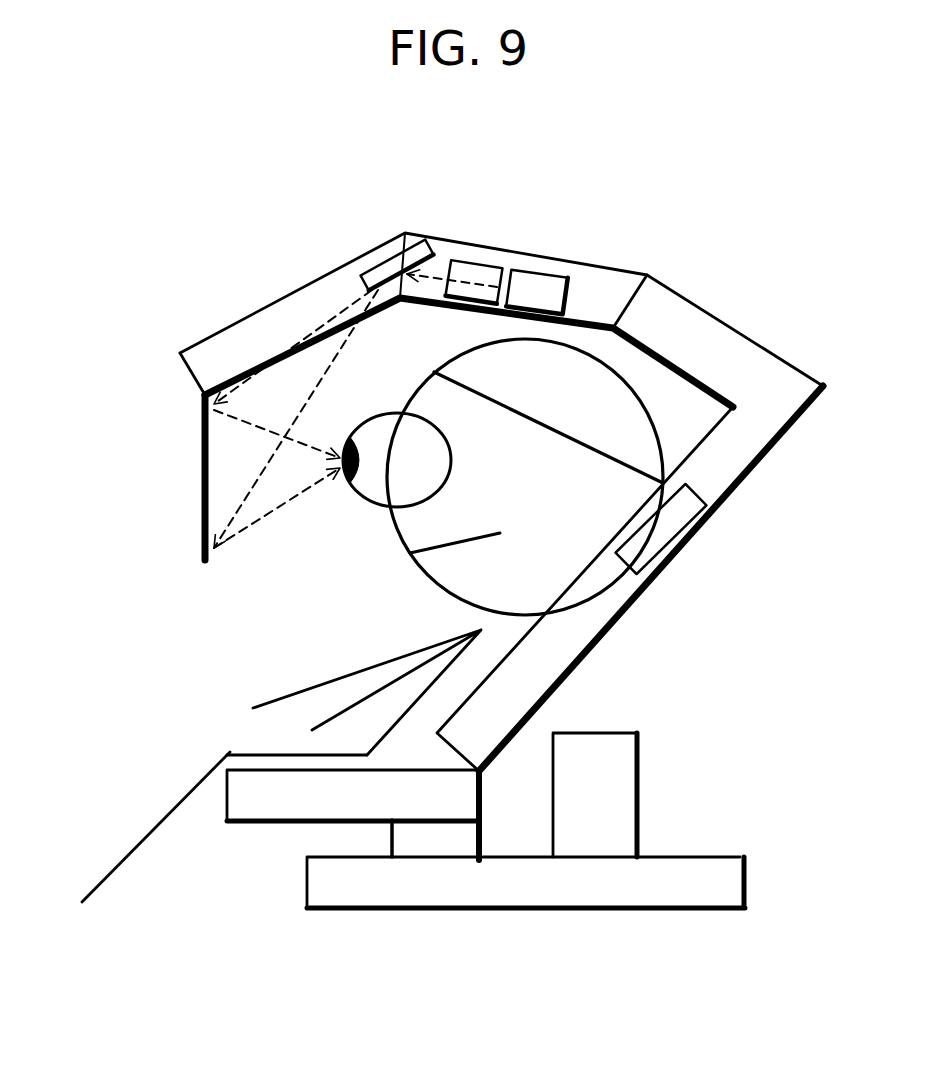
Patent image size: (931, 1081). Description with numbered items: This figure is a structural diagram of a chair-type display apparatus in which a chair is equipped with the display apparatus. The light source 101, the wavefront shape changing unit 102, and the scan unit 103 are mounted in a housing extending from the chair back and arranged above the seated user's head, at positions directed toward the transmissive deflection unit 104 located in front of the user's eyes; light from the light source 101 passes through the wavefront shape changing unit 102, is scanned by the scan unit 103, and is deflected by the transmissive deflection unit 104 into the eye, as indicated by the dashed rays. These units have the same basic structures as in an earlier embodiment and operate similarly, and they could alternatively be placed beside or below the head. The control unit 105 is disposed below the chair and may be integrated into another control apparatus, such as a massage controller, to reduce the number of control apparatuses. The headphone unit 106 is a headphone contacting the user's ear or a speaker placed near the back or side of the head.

The light source 101 is at (552, 271).
The wavefront shape changing unit 102 is at (475, 260).
The scan unit 103 is at (370, 268).
The transmissive deflection unit 104 is at (194, 441).
The control unit 105 is at (607, 731).
The headphone unit 106 is at (675, 543).